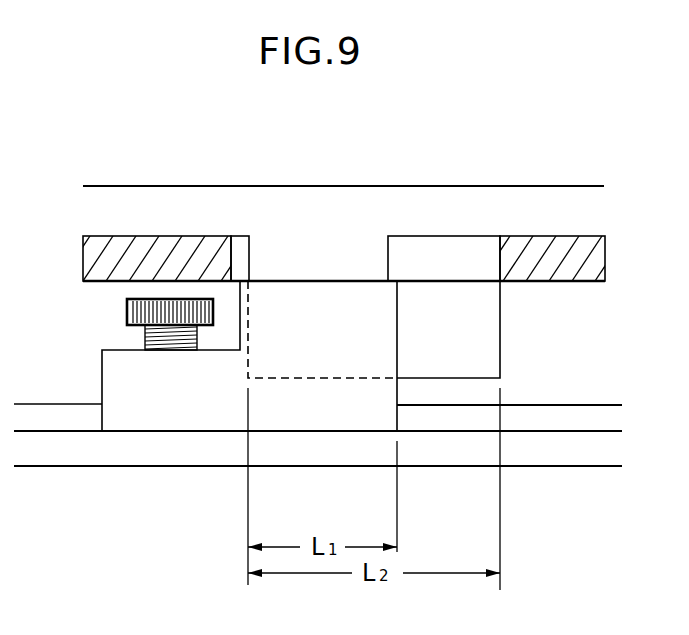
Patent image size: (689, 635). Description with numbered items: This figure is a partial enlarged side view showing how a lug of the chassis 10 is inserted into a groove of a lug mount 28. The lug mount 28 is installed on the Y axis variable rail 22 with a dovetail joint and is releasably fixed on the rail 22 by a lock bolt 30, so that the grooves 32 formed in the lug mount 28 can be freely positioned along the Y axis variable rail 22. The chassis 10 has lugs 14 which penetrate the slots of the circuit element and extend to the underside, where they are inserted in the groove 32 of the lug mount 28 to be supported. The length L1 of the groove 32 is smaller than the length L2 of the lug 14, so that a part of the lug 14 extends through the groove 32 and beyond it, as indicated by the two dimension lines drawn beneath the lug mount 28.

The chassis 10 is at (319, 200).
The lug 14 is at (483, 335).
The Y axis variable rail 22 is at (551, 450).
The lug mount 28 is at (170, 405).
The lock bolt 30 is at (128, 310).
The groove 32 is at (346, 377).